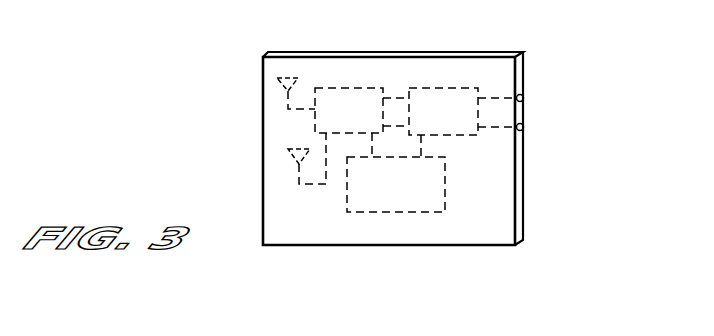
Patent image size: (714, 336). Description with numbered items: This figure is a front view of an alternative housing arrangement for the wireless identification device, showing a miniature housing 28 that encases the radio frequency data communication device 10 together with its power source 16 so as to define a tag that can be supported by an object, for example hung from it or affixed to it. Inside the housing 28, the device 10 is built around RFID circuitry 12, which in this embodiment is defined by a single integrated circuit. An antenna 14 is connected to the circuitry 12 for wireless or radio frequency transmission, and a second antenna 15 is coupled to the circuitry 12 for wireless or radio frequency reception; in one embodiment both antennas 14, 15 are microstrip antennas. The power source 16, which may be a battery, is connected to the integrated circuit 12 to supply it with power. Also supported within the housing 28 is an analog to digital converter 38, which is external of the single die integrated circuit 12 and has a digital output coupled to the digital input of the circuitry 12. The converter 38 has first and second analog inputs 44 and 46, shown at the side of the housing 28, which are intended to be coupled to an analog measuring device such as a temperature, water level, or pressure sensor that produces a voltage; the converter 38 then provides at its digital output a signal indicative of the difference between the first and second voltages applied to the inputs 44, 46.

The radio frequency data communication device 10 is at (400, 63).
The RFID circuitry 12 is at (348, 86).
The antenna 14 is at (291, 147).
The antenna 15 is at (275, 86).
The power source 16 is at (374, 214).
The miniature housing 28 is at (263, 178).
The analog to digital converter 38 is at (460, 86).
The first analog input 44 is at (527, 97).
The second analog input 46 is at (527, 128).